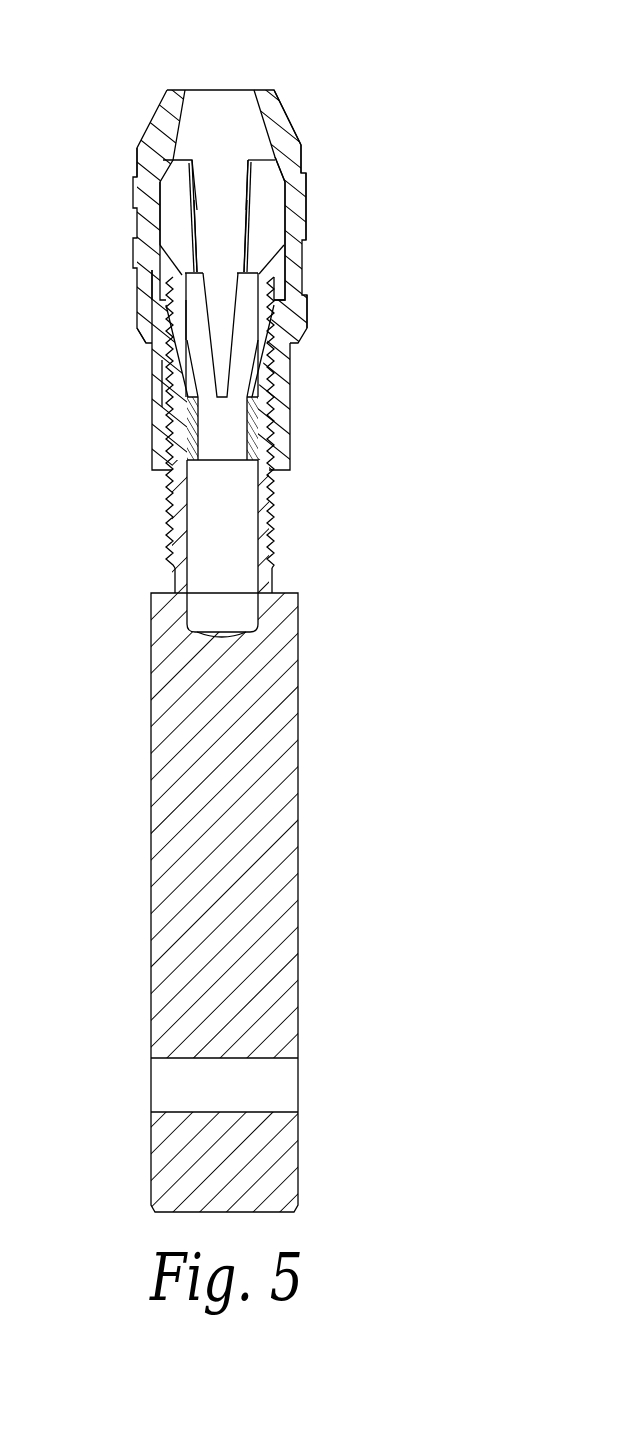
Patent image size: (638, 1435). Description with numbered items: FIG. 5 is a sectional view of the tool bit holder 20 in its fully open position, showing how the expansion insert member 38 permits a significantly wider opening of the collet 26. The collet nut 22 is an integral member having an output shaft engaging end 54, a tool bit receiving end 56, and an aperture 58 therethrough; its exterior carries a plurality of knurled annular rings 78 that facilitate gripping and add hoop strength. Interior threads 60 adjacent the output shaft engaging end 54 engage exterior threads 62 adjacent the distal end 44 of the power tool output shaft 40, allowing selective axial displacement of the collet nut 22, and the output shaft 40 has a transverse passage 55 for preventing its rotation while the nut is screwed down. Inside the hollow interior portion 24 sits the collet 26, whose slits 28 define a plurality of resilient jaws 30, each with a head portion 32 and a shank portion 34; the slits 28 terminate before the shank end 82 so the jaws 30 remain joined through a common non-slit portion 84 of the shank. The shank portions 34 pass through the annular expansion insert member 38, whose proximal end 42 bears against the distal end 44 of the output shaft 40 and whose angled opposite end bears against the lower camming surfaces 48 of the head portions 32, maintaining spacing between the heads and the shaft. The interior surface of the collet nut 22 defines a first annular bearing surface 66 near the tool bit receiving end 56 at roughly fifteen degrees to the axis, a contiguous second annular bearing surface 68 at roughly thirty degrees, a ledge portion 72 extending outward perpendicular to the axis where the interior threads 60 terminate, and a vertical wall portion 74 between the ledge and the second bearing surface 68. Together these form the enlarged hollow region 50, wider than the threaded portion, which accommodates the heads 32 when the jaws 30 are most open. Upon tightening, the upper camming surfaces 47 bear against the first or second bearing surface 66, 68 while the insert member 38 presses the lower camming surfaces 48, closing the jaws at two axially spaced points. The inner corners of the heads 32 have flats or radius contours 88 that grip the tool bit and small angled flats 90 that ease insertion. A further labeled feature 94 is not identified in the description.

The tool bit holder 20 is at (313, 338).
The collet nut 22 is at (232, 182).
The hollow interior portion 24 is at (205, 265).
The collet 26 is at (160, 333).
The slits 28 is at (307, 305).
The resilient jaws 30 is at (170, 228).
The head portion 32 is at (170, 196).
The shank portion 34 is at (165, 378).
The expansion insert member 38 is at (223, 317).
The output shaft 40 is at (310, 551).
The proximal end 42 is at (262, 393).
The distal end 44 is at (190, 416).
The upper camming surface 47 is at (137, 152).
The lower camming surface 48 is at (162, 256).
The enlarged hollow region 50 is at (275, 241).
The output shaft engaging end 54 is at (291, 468).
The transverse passage 55 is at (273, 1083).
The tool bit receiving end 56 is at (190, 107).
The aperture 58 is at (198, 90).
The interior threads 60 is at (247, 420).
The exterior threads 62 is at (268, 438).
The first annular bearing surface 66 is at (247, 118).
The second annular bearing surface 68 is at (290, 153).
The ledge portion 72 is at (288, 278).
The vertical wall portion 74 is at (268, 192).
The annular rings 78 is at (266, 159).
The shank end 82 is at (225, 462).
The common non-slit portion 84 is at (225, 412).
The flat or radius contour 88 is at (237, 225).
The angled flats 90 is at (240, 178).
The segment inner wall 94 is at (184, 326).